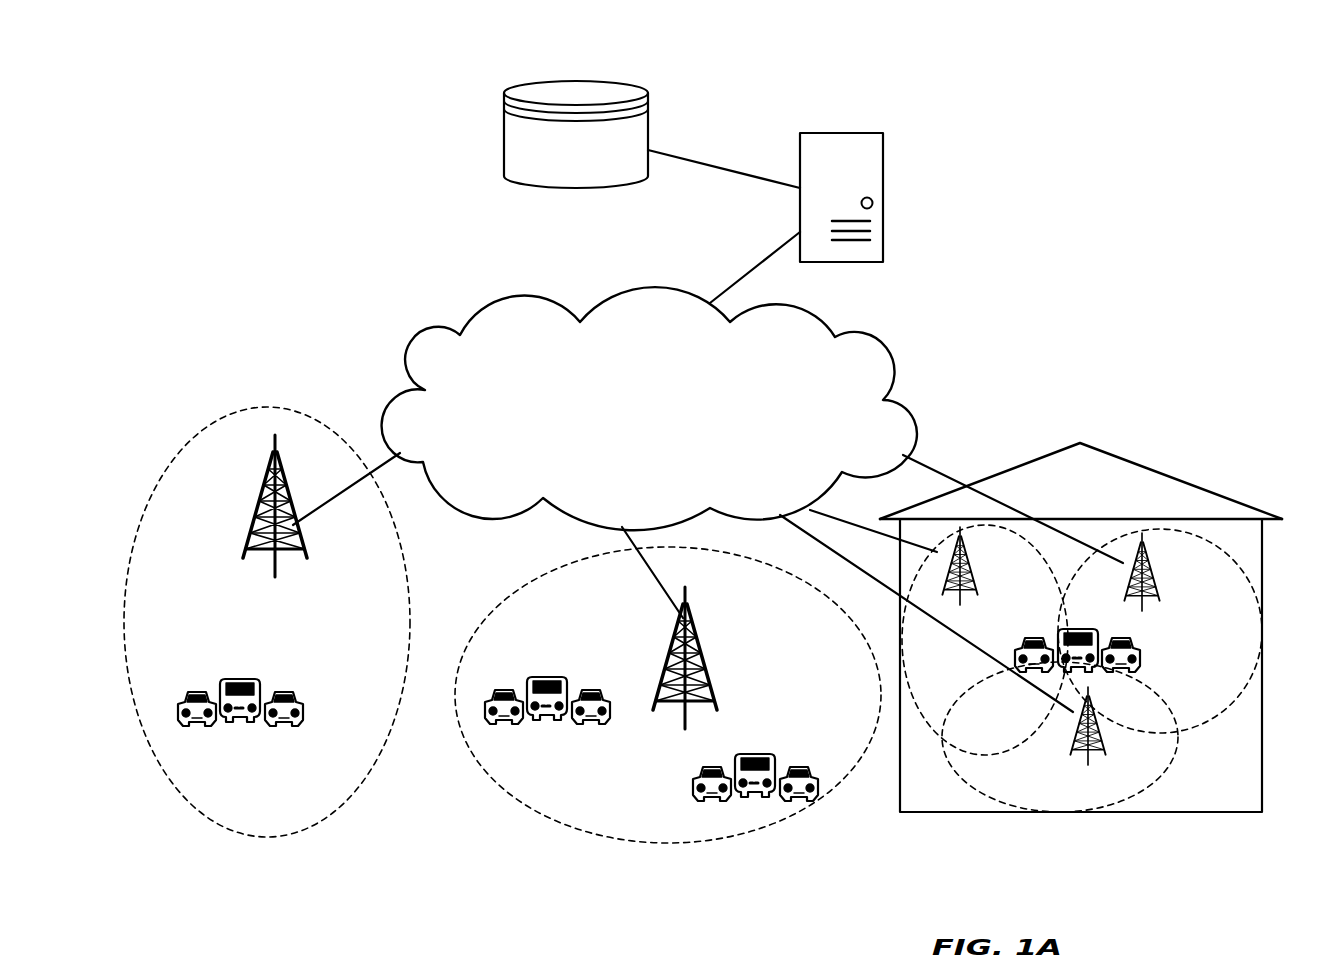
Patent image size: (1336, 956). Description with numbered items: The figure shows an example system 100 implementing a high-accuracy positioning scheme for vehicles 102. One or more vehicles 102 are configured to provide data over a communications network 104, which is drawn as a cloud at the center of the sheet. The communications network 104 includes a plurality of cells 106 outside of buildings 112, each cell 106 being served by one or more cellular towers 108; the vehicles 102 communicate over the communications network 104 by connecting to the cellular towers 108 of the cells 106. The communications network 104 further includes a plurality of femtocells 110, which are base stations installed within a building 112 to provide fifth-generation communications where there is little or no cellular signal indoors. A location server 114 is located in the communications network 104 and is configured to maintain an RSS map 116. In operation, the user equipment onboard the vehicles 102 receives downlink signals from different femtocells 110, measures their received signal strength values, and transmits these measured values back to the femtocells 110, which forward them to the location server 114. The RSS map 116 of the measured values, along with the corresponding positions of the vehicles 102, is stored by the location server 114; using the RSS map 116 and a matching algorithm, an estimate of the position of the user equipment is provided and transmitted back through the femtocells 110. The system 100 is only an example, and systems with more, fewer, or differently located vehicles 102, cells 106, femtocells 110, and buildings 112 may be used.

The system 100 is at (232, 66).
The vehicles 102 is at (303, 717).
The communications network 104 is at (645, 453).
The cell 106 is at (844, 735).
The cellular tower 108 is at (743, 638).
The femtocell 110 is at (1211, 667).
The building 112 is at (1067, 875).
The location server 114 is at (963, 232).
The RSS map 116 is at (576, 134).